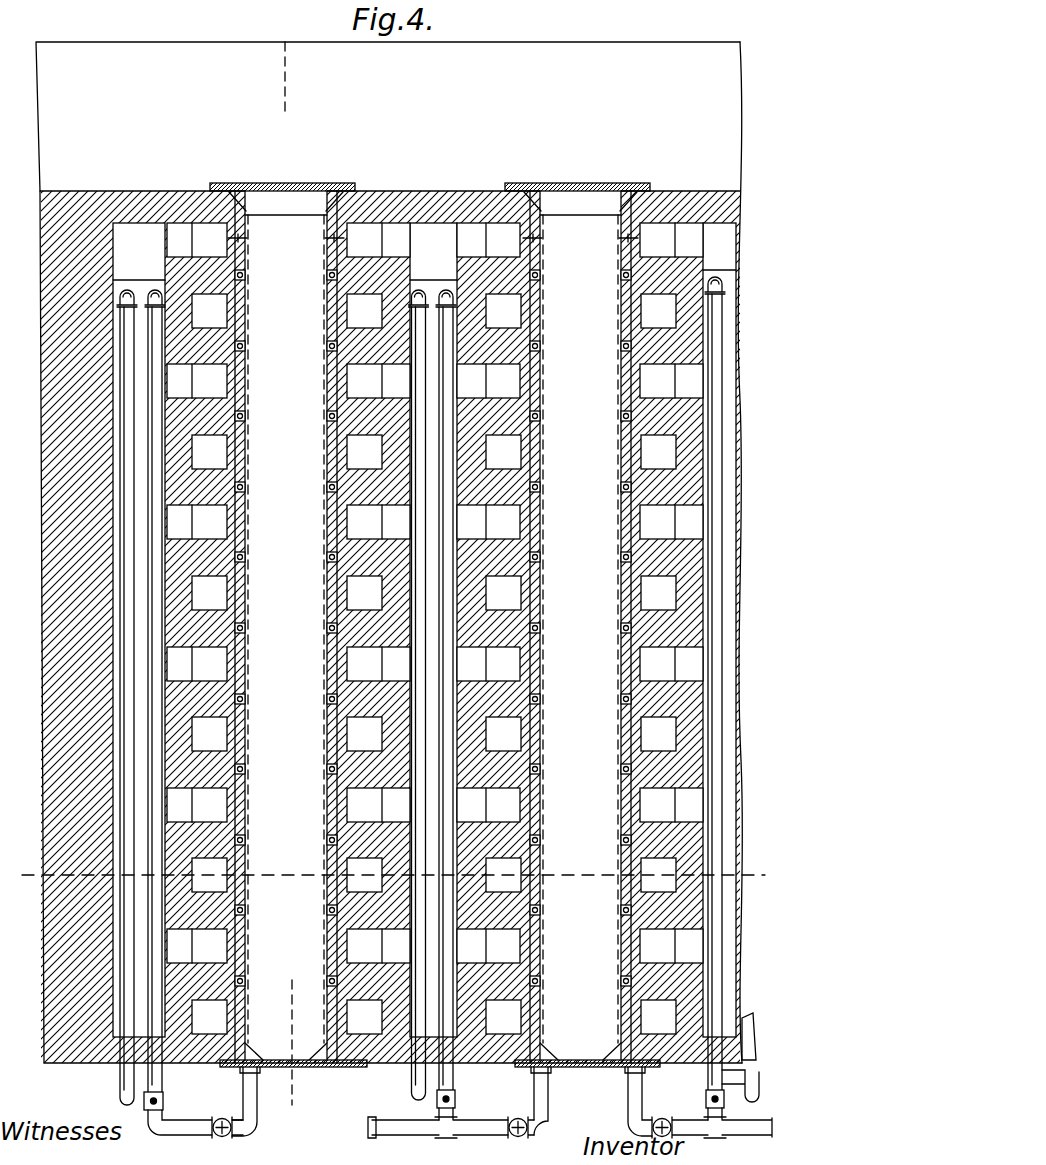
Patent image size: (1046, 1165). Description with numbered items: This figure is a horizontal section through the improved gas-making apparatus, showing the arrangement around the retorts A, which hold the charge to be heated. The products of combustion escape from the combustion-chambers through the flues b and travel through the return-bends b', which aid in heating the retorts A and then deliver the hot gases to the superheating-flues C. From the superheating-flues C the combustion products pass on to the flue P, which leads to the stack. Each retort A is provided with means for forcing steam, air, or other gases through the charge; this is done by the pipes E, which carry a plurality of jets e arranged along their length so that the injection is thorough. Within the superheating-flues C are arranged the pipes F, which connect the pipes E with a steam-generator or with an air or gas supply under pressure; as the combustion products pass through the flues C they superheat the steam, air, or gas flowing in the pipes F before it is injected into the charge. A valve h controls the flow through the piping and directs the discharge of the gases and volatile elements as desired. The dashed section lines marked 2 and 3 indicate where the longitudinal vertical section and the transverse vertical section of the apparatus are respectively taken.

The section line 2 2 is at (284, 60).
The section line 3 3 is at (393, 874).
The flue P is at (389, 552).
The retort A is at (435, 625).
The flue b is at (434, 664).
The return-bend b' is at (435, 593).
The jet e is at (433, 630).
The pipe F is at (387, 691).
The superheating-flue C is at (143, 981).
The pipe E is at (458, 1102).
The valve h is at (291, 1051).